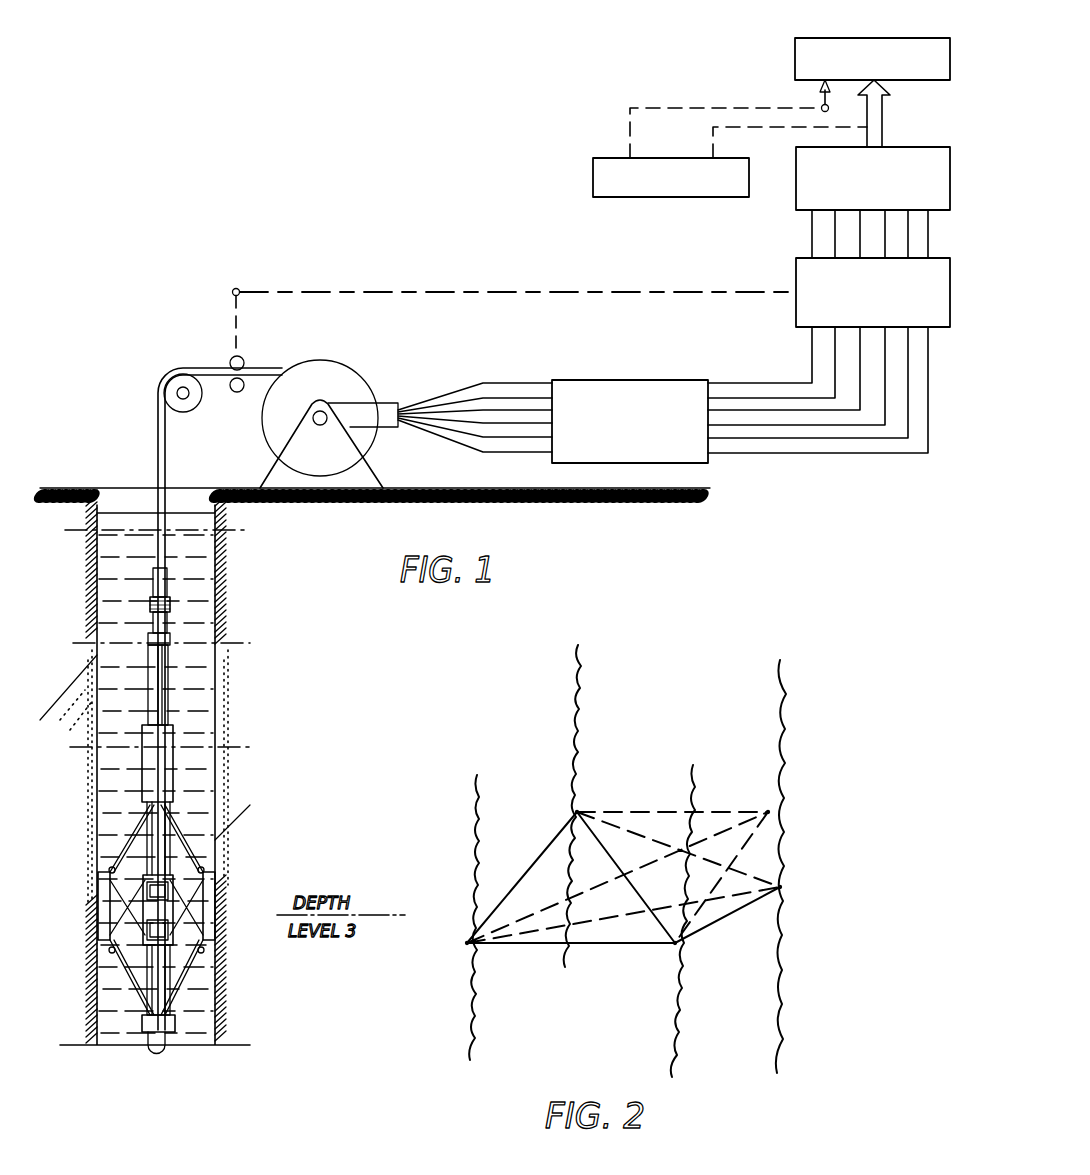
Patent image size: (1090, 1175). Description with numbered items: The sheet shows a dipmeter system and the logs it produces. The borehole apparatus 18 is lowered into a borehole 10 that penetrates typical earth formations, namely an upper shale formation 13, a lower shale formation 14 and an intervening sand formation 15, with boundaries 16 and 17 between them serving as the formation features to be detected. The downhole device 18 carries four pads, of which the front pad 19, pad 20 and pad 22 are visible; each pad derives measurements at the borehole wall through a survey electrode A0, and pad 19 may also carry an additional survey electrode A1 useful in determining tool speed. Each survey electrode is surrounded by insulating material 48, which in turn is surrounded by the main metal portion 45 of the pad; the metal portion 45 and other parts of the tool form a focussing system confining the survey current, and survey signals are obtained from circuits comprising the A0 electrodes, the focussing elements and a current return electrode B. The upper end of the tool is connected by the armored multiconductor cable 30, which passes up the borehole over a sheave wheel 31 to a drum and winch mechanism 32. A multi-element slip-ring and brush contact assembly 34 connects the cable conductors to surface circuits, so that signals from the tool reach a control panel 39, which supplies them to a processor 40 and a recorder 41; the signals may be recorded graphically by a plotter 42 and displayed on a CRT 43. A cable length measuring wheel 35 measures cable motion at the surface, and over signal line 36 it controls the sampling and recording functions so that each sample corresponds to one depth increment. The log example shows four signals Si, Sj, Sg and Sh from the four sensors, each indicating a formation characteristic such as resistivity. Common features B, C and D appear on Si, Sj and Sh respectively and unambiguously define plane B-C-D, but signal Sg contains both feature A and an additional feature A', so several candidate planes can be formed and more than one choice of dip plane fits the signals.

In FIG. 1, the borehole 10 is at (93, 585).
In FIG. 1, the shale formation 13 is at (72, 676).
In FIG. 1, the shale formation 14 is at (72, 999).
In FIG. 1, the sand formation 15 is at (348, 470).
In FIG. 1, the boundary 16 is at (240, 852).
In FIG. 1, the boundary 17 is at (238, 655).
In FIG. 1, the borehole apparatus 18 is at (172, 700).
In FIG. 1, the pad 19 is at (178, 940).
In FIG. 1, the pad 20 is at (98, 888).
In FIG. 1, the pad 22 is at (212, 918).
In FIG. 1, the armored multiconductor cable 30 is at (165, 480).
In FIG. 1, the sheave wheel 31 is at (196, 402).
In FIG. 1, the drum and winch mechanism 32 is at (367, 377).
In FIG. 1, the slip-ring and brush contact assembly 34 is at (306, 376).
In FIG. 1, the cable length measuring wheel 35 is at (228, 362).
In FIG. 1, the signal line 36 is at (338, 292).
In FIG. 1, the control panel 39 is at (590, 380).
In FIG. 1, the processor 40 is at (885, 147).
In FIG. 1, the recorder 41 is at (796, 275).
In FIG. 1, the plotter 42 is at (593, 178).
In FIG. 1, the CRT 43 is at (812, 38).
In FIG. 1, the main metal portion 45 is at (148, 912).
In FIG. 1, the insulating material 48 is at (142, 884).
In FIG. 1, the additional survey electrode A1 is at (185, 884).
In FIG. 1, the survey electrode A0 is at (175, 934).
In FIG. 1, the current return electrode B is at (172, 604).
In FIG. 2, the current return electrode B is at (661, 958).
In FIG. 2, the feature A is at (764, 799).
In FIG. 2, the feature A' is at (800, 872).
In FIG. 2, the feature C is at (455, 931).
In FIG. 2, the feature D is at (566, 799).
In FIG. 2, the signal Sg is at (784, 851).
In FIG. 2, the signal Sh is at (582, 790).
In FIG. 2, the signal Si is at (685, 903).
In FIG. 2, the signal Sj is at (472, 899).